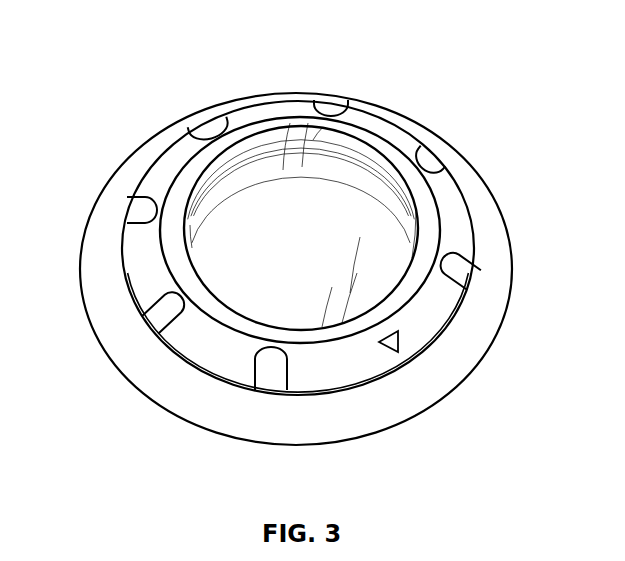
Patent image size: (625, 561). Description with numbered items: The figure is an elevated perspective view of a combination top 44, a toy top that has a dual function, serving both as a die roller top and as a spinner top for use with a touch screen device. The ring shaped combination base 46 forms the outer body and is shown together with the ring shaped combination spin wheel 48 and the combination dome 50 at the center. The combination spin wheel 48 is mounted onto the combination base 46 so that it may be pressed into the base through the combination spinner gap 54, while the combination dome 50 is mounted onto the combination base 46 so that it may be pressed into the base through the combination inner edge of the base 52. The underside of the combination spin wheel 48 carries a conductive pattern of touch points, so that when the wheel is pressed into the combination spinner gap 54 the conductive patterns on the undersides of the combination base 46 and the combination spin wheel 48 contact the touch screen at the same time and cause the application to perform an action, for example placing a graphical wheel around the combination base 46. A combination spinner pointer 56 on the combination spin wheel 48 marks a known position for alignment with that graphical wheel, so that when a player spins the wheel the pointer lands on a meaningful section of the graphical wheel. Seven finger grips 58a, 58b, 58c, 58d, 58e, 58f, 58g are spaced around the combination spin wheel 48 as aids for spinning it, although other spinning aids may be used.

The combination top 44 is at (313, 260).
The combination base 46 is at (500, 247).
The combination spin wheel 48 is at (460, 215).
The combination dome 50 is at (378, 137).
The combination inner edge of the base 52 is at (200, 175).
The combination spinner gap 54 is at (200, 367).
The combination spinner pointer 56 is at (398, 348).
The finger grip 58a is at (213, 127).
The finger grip 58b is at (327, 110).
The finger grip 58c is at (436, 164).
The finger grip 58d is at (466, 268).
The finger grip 58e is at (275, 370).
The finger grip 58f is at (163, 318).
The finger grip 58g is at (137, 211).